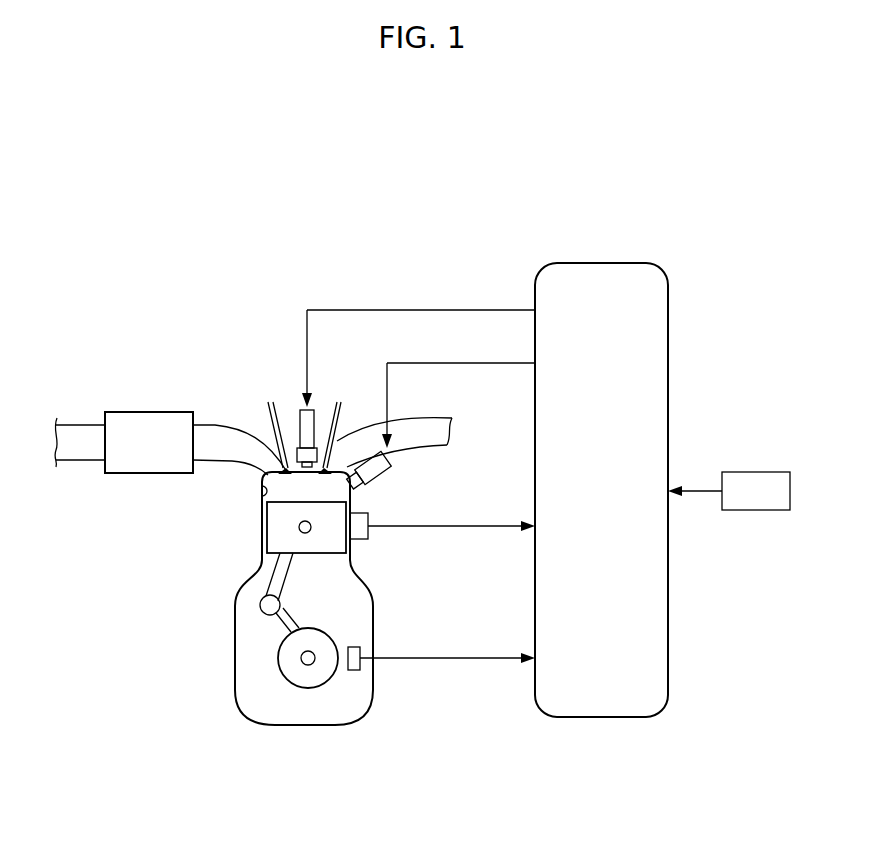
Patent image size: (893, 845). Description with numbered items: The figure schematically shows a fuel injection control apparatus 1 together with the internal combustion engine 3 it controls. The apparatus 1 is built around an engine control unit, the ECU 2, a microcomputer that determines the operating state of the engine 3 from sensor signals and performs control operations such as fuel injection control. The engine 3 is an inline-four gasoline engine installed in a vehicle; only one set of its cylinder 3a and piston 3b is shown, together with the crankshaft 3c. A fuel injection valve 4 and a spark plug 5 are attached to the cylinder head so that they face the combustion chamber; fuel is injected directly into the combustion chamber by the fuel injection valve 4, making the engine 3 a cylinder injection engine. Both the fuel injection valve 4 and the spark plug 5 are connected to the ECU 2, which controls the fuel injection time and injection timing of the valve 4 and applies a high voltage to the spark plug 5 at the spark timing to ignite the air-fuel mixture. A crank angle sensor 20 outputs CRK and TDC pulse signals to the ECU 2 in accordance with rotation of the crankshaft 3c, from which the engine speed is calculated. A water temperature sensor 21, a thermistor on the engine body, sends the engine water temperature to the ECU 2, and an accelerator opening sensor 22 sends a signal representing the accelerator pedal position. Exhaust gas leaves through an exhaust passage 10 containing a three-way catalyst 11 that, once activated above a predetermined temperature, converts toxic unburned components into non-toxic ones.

The fuel injection control apparatus 1 is at (694, 222).
The engine control unit (ECU) 2 is at (610, 263).
The internal combustion engine 3 is at (234, 690).
The cylinder 3a is at (262, 492).
The piston 3b is at (272, 562).
The crankshaft 3c is at (303, 665).
The fuel injection valve 4 is at (380, 478).
The spark plug 5 is at (316, 410).
The exhaust passage 10 is at (217, 424).
The catalyst 11 is at (155, 412).
The crank angle sensor 20 is at (363, 666).
The water temperature sensor 21 is at (370, 536).
The accelerator opening sensor 22 is at (753, 472).